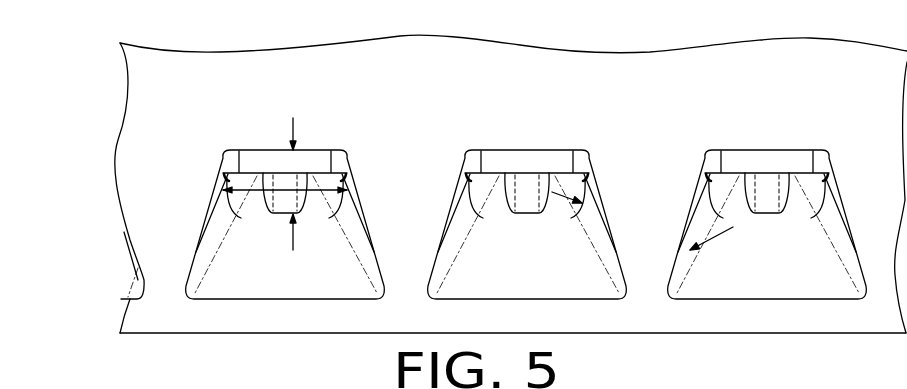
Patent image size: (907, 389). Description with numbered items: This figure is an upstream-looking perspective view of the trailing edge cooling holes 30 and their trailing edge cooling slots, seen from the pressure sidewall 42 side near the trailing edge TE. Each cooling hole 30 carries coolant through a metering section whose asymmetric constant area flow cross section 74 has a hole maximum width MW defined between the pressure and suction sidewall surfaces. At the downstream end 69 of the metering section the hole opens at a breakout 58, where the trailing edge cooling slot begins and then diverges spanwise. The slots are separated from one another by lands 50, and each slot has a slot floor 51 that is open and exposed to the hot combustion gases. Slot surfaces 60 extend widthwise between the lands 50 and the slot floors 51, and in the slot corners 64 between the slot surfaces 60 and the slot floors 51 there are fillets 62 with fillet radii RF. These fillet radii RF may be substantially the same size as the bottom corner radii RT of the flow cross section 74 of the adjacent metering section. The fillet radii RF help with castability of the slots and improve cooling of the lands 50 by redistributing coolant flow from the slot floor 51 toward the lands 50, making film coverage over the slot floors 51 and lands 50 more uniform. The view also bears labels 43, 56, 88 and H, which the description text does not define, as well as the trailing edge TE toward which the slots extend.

The trailing edge cooling hole 30 is at (813, 186).
The pressure sidewall 42 is at (488, 100).
The outer surface 43 is at (452, 57).
The land 50 is at (643, 222).
The slot floor 51 is at (333, 251).
The land base 56 is at (281, 275).
The breakout 58 is at (281, 150).
The slot surface 60 is at (229, 223).
The fillet 62 is at (835, 231).
The slot corner 64 is at (843, 251).
The downstream end of the metering section 69 is at (352, 180).
The asymmetric constant area flow cross section 74 is at (259, 179).
The groove 88 is at (766, 199).
The hole maximum width MW is at (299, 133).
The height H is at (284, 219).
The bottom corner radius RT is at (582, 206).
The fillet radius RF is at (709, 238).
The trailing edge TE is at (752, 335).